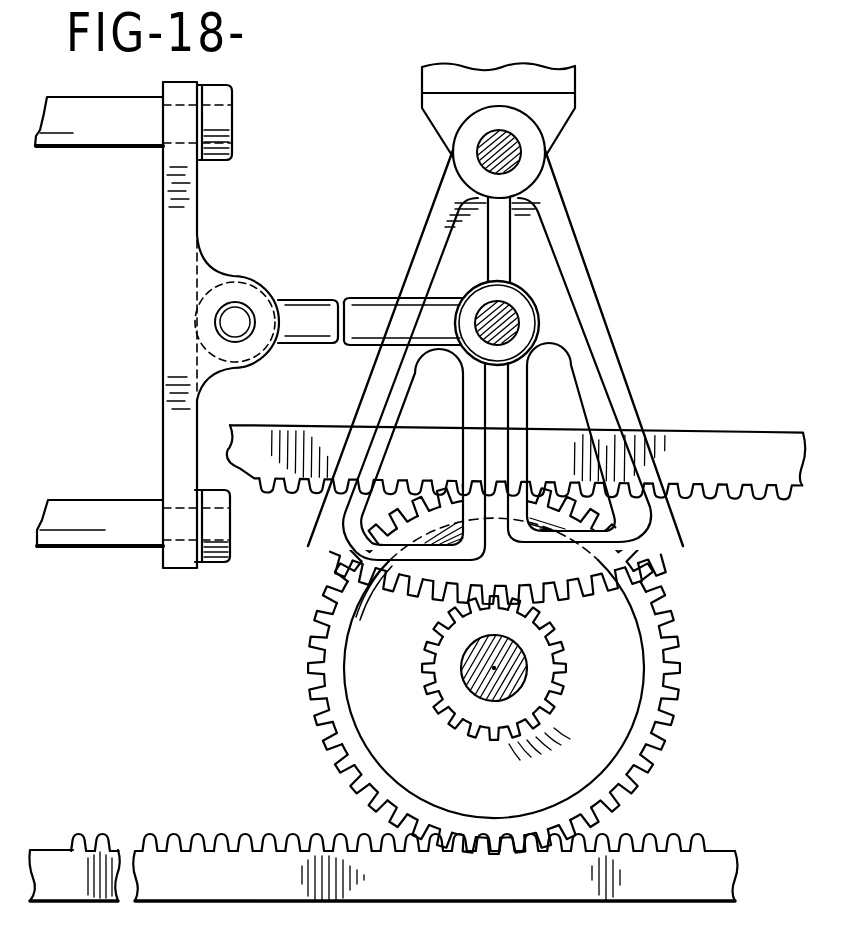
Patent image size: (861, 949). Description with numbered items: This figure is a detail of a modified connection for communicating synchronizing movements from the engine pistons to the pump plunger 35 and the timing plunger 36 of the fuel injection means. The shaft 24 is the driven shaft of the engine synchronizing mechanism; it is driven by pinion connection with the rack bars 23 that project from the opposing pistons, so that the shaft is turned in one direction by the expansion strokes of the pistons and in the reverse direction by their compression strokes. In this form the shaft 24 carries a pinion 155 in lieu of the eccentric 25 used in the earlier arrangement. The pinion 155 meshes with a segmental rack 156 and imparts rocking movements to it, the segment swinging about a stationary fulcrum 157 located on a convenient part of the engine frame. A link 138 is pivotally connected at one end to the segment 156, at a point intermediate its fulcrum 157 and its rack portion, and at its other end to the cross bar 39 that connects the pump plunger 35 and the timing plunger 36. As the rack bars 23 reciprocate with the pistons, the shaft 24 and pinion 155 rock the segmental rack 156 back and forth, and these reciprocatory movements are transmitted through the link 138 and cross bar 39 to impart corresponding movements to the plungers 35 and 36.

The rack bar 23 is at (753, 407).
The shaft 24 is at (477, 685).
The eccentric 25 is at (667, 733).
The pump plunger 35 is at (113, 480).
The timing plunger 36 is at (85, 137).
The cross bar 39 is at (190, 220).
The link 138 is at (347, 270).
The pinion 155 is at (547, 687).
The segmental rack 156 is at (673, 540).
The stationary fulcrum 157 is at (522, 162).